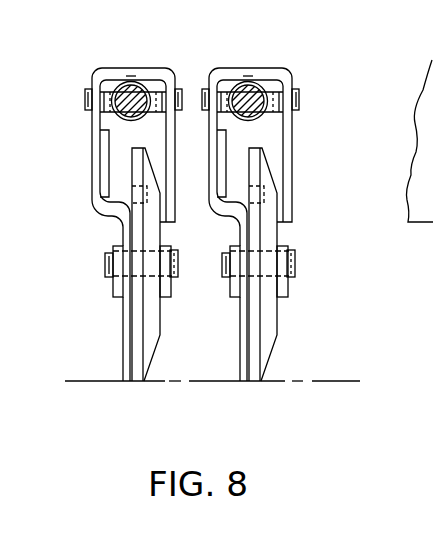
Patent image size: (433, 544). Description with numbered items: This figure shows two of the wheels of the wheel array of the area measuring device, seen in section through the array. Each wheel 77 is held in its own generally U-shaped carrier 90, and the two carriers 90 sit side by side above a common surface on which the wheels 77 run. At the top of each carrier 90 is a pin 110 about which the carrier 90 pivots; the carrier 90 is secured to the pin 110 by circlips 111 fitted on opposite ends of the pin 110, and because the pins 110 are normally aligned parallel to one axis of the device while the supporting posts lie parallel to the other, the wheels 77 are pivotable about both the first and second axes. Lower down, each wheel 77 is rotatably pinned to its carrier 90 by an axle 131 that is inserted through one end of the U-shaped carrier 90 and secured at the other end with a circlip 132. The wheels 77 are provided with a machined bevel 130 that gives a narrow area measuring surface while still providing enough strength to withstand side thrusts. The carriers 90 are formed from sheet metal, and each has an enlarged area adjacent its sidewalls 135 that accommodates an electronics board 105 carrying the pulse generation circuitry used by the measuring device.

The wheel 77 is at (132, 381).
The wheel carrier 90 is at (156, 69).
The electronics board 105 is at (105, 150).
The pin 110 is at (86, 98).
The circlip 111 is at (85, 88).
The machined bevel 130 is at (270, 336).
The axle 131 is at (288, 264).
The circlip 132 is at (232, 290).
The sidewall 135 is at (95, 183).